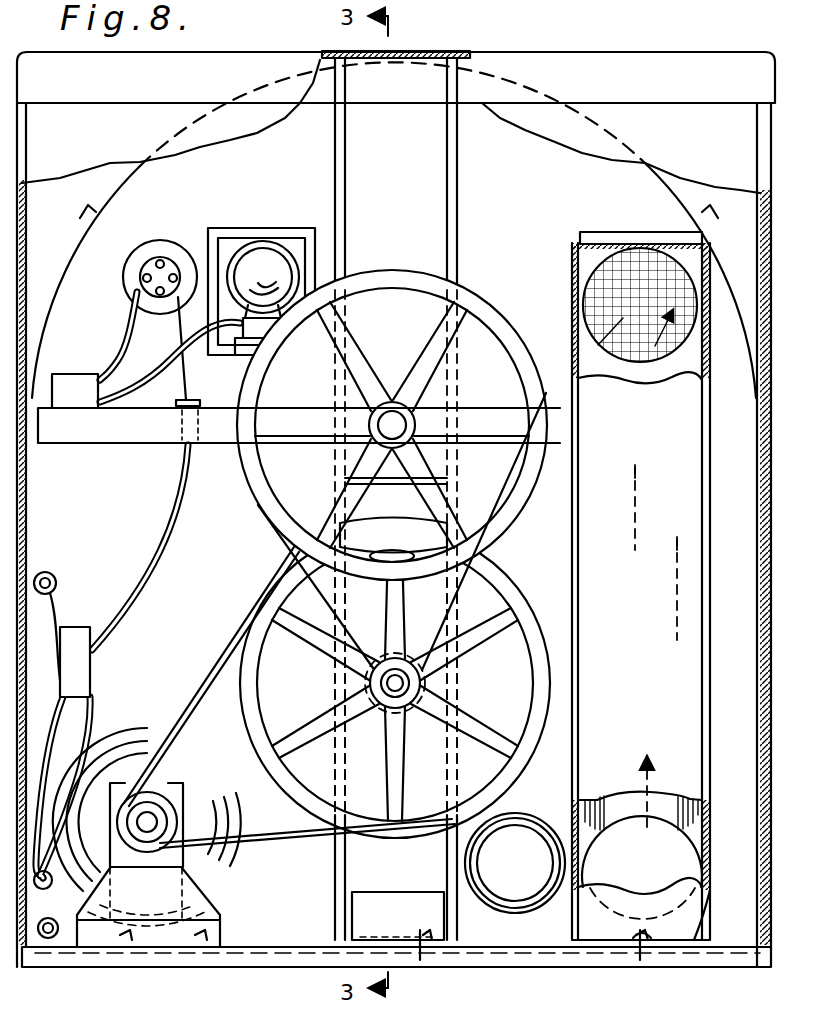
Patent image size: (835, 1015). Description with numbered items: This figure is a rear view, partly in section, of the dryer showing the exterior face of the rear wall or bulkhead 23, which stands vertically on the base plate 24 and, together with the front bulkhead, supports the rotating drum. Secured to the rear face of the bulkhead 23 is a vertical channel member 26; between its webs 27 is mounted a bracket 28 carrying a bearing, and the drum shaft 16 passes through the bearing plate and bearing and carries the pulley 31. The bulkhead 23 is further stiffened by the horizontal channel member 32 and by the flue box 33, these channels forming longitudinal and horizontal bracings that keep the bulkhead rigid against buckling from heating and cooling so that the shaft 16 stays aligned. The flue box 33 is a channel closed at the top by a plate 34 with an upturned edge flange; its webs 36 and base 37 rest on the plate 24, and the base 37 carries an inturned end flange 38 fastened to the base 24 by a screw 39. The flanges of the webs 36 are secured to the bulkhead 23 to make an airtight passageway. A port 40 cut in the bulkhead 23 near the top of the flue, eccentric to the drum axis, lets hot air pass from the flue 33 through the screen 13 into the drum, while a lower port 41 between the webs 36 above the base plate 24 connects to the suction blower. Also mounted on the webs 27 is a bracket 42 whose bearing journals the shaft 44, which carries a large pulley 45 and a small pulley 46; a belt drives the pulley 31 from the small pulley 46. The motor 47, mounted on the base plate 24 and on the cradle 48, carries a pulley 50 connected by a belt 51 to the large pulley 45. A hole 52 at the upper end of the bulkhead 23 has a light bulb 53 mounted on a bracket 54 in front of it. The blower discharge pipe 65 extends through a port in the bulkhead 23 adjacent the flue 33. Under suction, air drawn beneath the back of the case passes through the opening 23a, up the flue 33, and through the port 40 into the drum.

The screen 13 is at (612, 305).
The shaft 16 is at (395, 410).
The rear wall or bulkhead 23 is at (330, 60).
The opening 23a is at (222, 895).
The base plate 24 is at (470, 970).
The channel member 26 is at (418, 80).
The webs 27 is at (338, 150).
The bracket 28 is at (387, 482).
The pulley 31 is at (376, 425).
The horizontal channel member 32 is at (87, 445).
The flue box 33 is at (656, 430).
The plate 34 is at (653, 215).
The webs 36 is at (714, 273).
The base 37 is at (585, 927).
The end flange 38 is at (700, 930).
The screw 39 is at (660, 910).
The port 40 is at (578, 335).
The port 41 is at (590, 820).
The bracket 42 is at (378, 722).
The shaft 44 is at (383, 682).
The large pulley 45 is at (377, 683).
The small pulley 46 is at (412, 662).
The motor 47 is at (166, 802).
The cradle 48 is at (173, 860).
The pulley 50 is at (170, 833).
The belt 51 is at (213, 676).
The hole 52 is at (289, 247).
The light bulb 53 is at (252, 262).
The bracket 54 is at (271, 242).
The pipe 65 is at (512, 898).